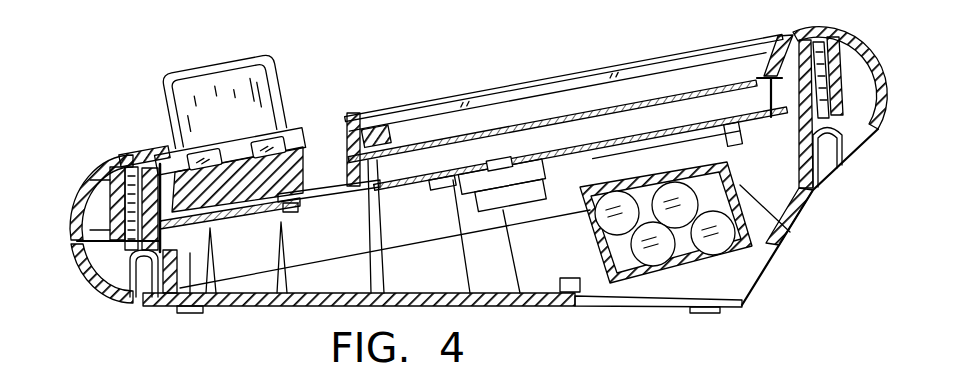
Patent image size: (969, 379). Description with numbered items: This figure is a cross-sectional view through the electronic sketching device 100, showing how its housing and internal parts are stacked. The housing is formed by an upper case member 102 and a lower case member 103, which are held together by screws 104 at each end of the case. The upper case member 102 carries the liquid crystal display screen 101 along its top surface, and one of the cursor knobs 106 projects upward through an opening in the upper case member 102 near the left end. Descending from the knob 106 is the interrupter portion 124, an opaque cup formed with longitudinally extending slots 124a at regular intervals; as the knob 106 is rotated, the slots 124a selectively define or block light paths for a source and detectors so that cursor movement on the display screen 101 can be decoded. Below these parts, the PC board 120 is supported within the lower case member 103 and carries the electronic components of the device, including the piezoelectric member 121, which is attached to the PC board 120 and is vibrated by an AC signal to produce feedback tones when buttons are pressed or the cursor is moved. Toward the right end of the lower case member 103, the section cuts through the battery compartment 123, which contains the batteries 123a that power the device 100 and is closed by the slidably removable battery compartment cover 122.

The electronic sketching device 100 is at (560, 33).
The liquid crystal display screen 101 is at (691, 82).
The upper case member 102 is at (89, 174).
The lower case member 103 is at (98, 280).
The screws 104 is at (838, 75).
The knob 106 is at (268, 79).
The PC board 120 is at (458, 167).
The piezoelectric member 121 is at (345, 208).
The battery compartment cover 122 is at (742, 252).
The battery compartment 123 is at (725, 200).
The batteries 123a is at (657, 257).
The interrupter portion 124 is at (294, 126).
The slots 124a is at (252, 143).